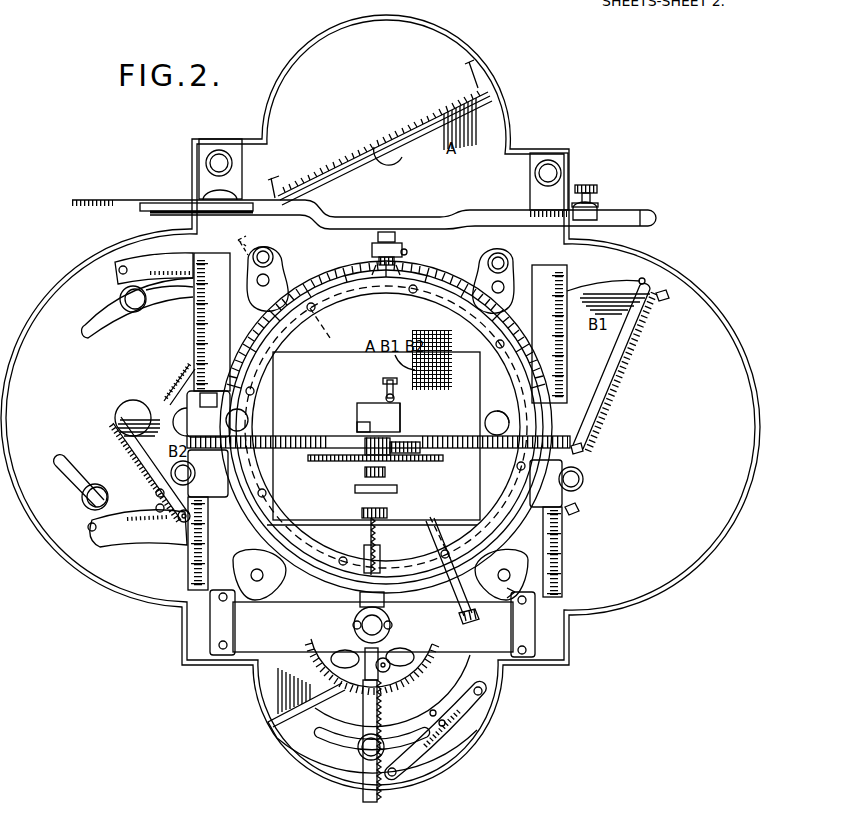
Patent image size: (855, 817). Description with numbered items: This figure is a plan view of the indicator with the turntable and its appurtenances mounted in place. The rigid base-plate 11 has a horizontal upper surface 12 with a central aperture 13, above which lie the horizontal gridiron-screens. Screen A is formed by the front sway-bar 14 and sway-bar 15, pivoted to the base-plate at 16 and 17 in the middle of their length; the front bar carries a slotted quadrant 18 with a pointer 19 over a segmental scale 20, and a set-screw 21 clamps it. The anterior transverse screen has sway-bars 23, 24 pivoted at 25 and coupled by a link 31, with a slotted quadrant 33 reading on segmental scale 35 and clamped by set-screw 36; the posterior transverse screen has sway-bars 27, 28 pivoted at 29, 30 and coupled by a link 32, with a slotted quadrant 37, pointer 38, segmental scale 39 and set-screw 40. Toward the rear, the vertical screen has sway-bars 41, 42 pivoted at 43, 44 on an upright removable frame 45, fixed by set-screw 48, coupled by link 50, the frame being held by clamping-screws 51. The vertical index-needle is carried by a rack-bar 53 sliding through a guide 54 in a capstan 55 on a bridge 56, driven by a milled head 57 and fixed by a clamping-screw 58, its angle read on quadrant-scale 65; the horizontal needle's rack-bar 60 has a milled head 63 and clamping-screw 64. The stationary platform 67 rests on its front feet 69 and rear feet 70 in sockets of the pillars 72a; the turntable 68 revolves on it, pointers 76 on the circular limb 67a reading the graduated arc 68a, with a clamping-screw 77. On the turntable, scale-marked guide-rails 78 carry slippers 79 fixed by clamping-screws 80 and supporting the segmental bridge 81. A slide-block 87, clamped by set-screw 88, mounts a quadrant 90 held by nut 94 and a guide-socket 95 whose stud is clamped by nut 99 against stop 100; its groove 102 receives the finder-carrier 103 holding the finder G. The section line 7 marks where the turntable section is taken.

The base-plate 11 is at (655, 580).
The horizontal upper surface 12 is at (380, 402).
The central aperture 13 is at (376, 436).
The front sway-bar 14 is at (333, 696).
The sway-bar 15 is at (410, 110).
The pivotal axis 16 is at (352, 652).
The pivotal axis 17 is at (402, 160).
The slotted quadrant 18 is at (330, 745).
The pointer 19 is at (450, 718).
The segmental scale 20 is at (475, 722).
The set-screw 21 is at (360, 755).
The sway-bar 23 is at (186, 385).
The sway-bar 24 is at (613, 378).
The pivotal center 25 is at (165, 415).
The sway-bar 27 is at (143, 460).
The sway-bar 28 is at (578, 512).
The pivotal center 29 is at (130, 410).
The pivotal center 30 is at (487, 424).
The link 31 is at (612, 289).
The link 32 is at (313, 522).
The slotted quadrant 33 is at (105, 322).
The segmental scale 35 is at (168, 275).
The set-screw 36 is at (140, 308).
The slotted quadrant 37 is at (60, 477).
The pointer 38 is at (158, 530).
The segmental scale 39 is at (135, 535).
The set-screw 40 is at (85, 505).
The sway-bar 41 is at (170, 203).
The sway-bar 42 is at (632, 228).
The pivotal axis 43 is at (207, 192).
The pivotal axis 44 is at (600, 210).
The upright removable frame 45 is at (487, 214).
The set-screw 48 is at (590, 185).
The link 50 is at (462, 229).
The clamping-screws 51 is at (208, 158).
The rack-bar 53 is at (379, 718).
The guide 54 is at (390, 600).
The capstan 55 is at (356, 614).
The bridge 56 is at (260, 638).
The milled head 57 is at (390, 672).
The clamping-screw 58 is at (382, 630).
The rack-bar 60 is at (398, 244).
The milled head 63 is at (380, 270).
The clamping-screw 64 is at (406, 254).
The quadrant-scale 65 is at (307, 633).
The stationary platform 67 is at (527, 360).
The circular limb 67a is at (290, 326).
The turntable 68 is at (312, 575).
The graduated arc 68a is at (336, 268).
The front pair of feet 69 is at (257, 581).
The rear pair of feet 70 is at (273, 258).
The pillars 72a is at (264, 247).
The pointer 76 is at (382, 288).
The clamping-screw 77 is at (472, 618).
The guide-rails 78 is at (195, 340).
The slippers 79 is at (212, 500).
The clamping-screws 80 is at (195, 474).
The bridge 81 is at (290, 438).
The slide-block 87 is at (392, 444).
The set-screw 88 is at (365, 508).
The quadrant 90 is at (318, 461).
The nut 94 is at (398, 489).
The guide-socket 95 is at (357, 427).
The nut 99 is at (365, 473).
The shoulder or stop 100 is at (400, 456).
The groove 102 is at (360, 412).
The finder-carrier 103 is at (403, 410).
The section line 7 is at (367, 419).
The finder G is at (385, 398).